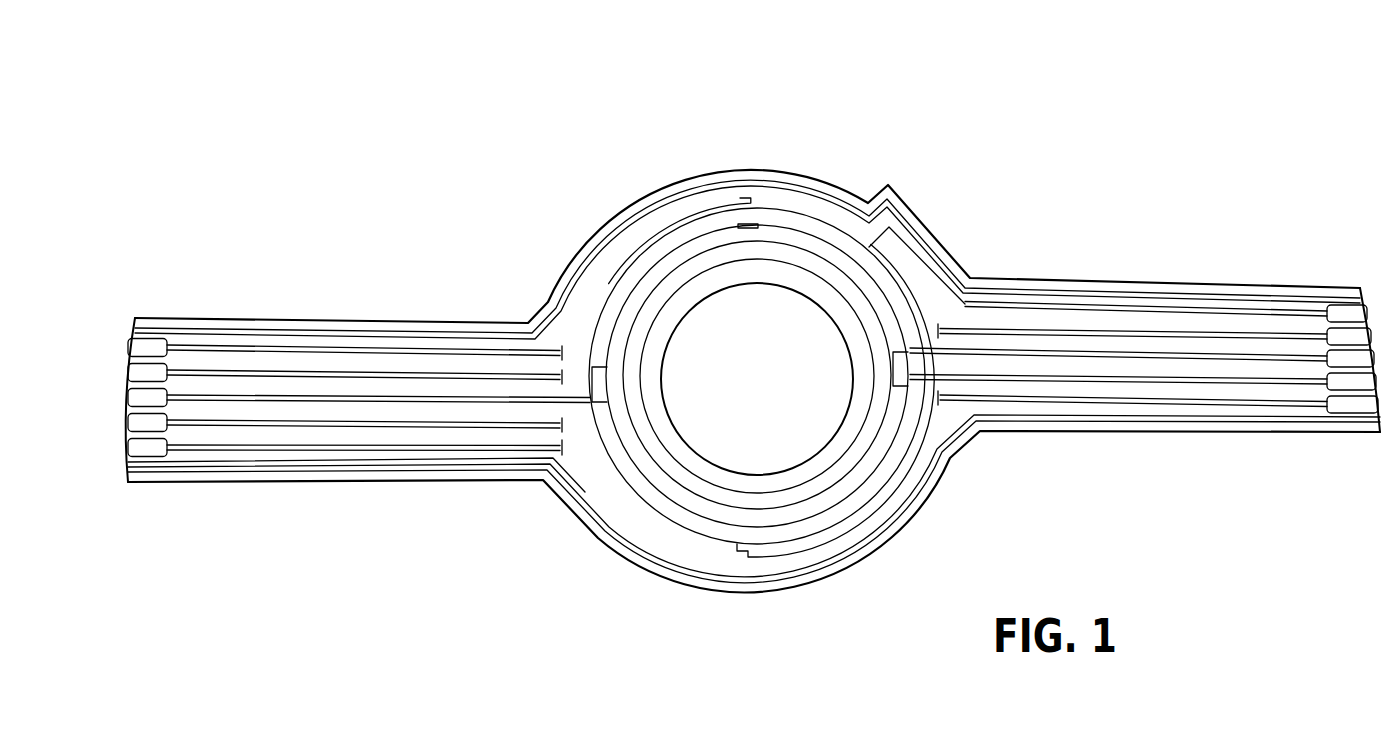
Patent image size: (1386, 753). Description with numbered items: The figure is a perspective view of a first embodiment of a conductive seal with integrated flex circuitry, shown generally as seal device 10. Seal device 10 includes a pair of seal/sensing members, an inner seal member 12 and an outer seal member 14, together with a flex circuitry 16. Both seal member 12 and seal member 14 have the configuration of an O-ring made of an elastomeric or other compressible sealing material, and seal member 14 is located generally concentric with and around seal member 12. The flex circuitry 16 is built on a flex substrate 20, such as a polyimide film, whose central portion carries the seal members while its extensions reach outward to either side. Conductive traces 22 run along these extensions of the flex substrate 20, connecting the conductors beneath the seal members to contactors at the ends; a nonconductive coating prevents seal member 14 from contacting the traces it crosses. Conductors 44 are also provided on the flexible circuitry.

The seal device 10 is at (872, 120).
The seal member 12 is at (690, 490).
The seal member 14 is at (670, 520).
The flex circuitry 16 is at (932, 208).
The flex substrate 20 is at (697, 287).
The conductive traces 22 is at (366, 397).
The conductors 44 is at (552, 445).